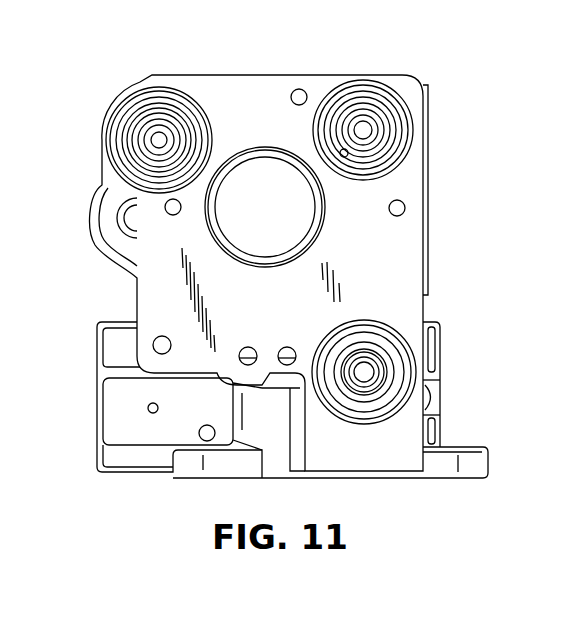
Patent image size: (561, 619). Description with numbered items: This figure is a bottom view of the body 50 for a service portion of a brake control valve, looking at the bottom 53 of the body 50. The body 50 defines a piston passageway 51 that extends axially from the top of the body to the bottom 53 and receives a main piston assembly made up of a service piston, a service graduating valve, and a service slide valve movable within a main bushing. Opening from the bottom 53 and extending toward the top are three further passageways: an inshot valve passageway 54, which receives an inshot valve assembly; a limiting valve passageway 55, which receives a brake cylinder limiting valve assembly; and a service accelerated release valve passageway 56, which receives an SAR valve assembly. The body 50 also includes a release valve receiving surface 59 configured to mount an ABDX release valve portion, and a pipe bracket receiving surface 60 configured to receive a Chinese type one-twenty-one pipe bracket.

The body 50 is at (70, 273).
The piston passageway 51 is at (267, 178).
The bottom 53 is at (153, 300).
The inshot valve passageway 54 is at (397, 378).
The limiting valve passageway 55 is at (407, 124).
The service accelerated release (SAR) valve passageway 56 is at (143, 132).
The release valve receiving surface 59 is at (428, 233).
The pipe bracket receiving surface 60 is at (477, 480).